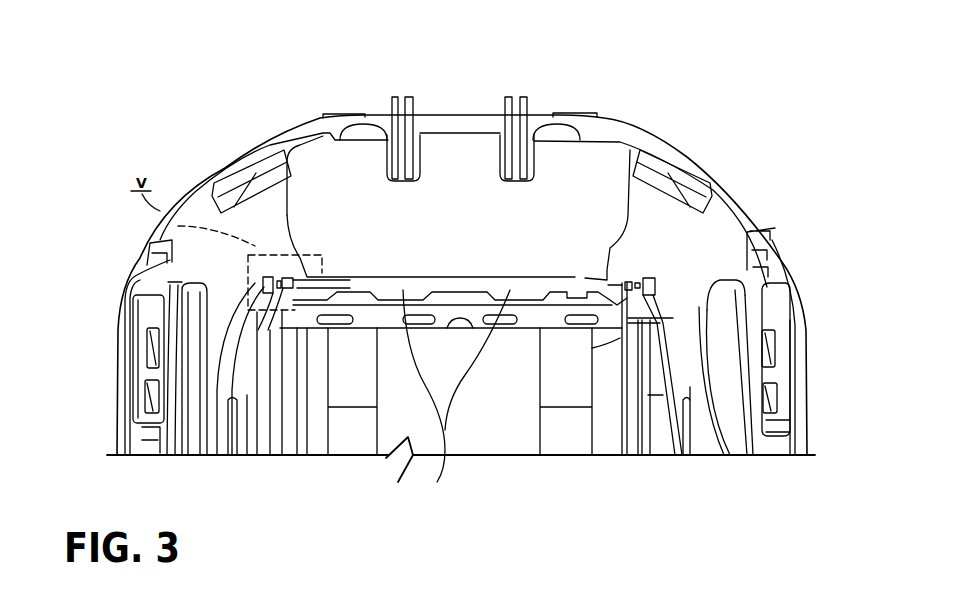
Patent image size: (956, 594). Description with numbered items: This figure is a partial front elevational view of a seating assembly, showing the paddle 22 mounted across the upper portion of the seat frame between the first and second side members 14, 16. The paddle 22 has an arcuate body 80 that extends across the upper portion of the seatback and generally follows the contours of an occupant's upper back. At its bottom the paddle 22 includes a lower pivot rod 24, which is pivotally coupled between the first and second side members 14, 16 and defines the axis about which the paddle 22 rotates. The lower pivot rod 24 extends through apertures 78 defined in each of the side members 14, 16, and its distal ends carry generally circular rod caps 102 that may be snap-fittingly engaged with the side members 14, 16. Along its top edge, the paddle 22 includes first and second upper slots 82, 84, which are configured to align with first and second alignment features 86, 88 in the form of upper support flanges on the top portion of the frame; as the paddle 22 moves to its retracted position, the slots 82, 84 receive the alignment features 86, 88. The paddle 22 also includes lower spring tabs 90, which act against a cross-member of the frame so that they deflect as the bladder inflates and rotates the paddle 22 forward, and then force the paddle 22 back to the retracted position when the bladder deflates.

The first side member 14 is at (163, 317).
The second side member 16 is at (752, 307).
The paddle 22 is at (545, 205).
The lower pivot rod 24 is at (288, 255).
The apertures 78 is at (262, 300).
The arcuate body 80 is at (342, 190).
The first upper slot 82 is at (388, 145).
The second upper slot 84 is at (532, 132).
The first alignment feature 86 is at (398, 143).
The second alignment feature 88 is at (513, 130).
The lower spring tabs 90 is at (446, 452).
The rod caps 102 is at (276, 268).